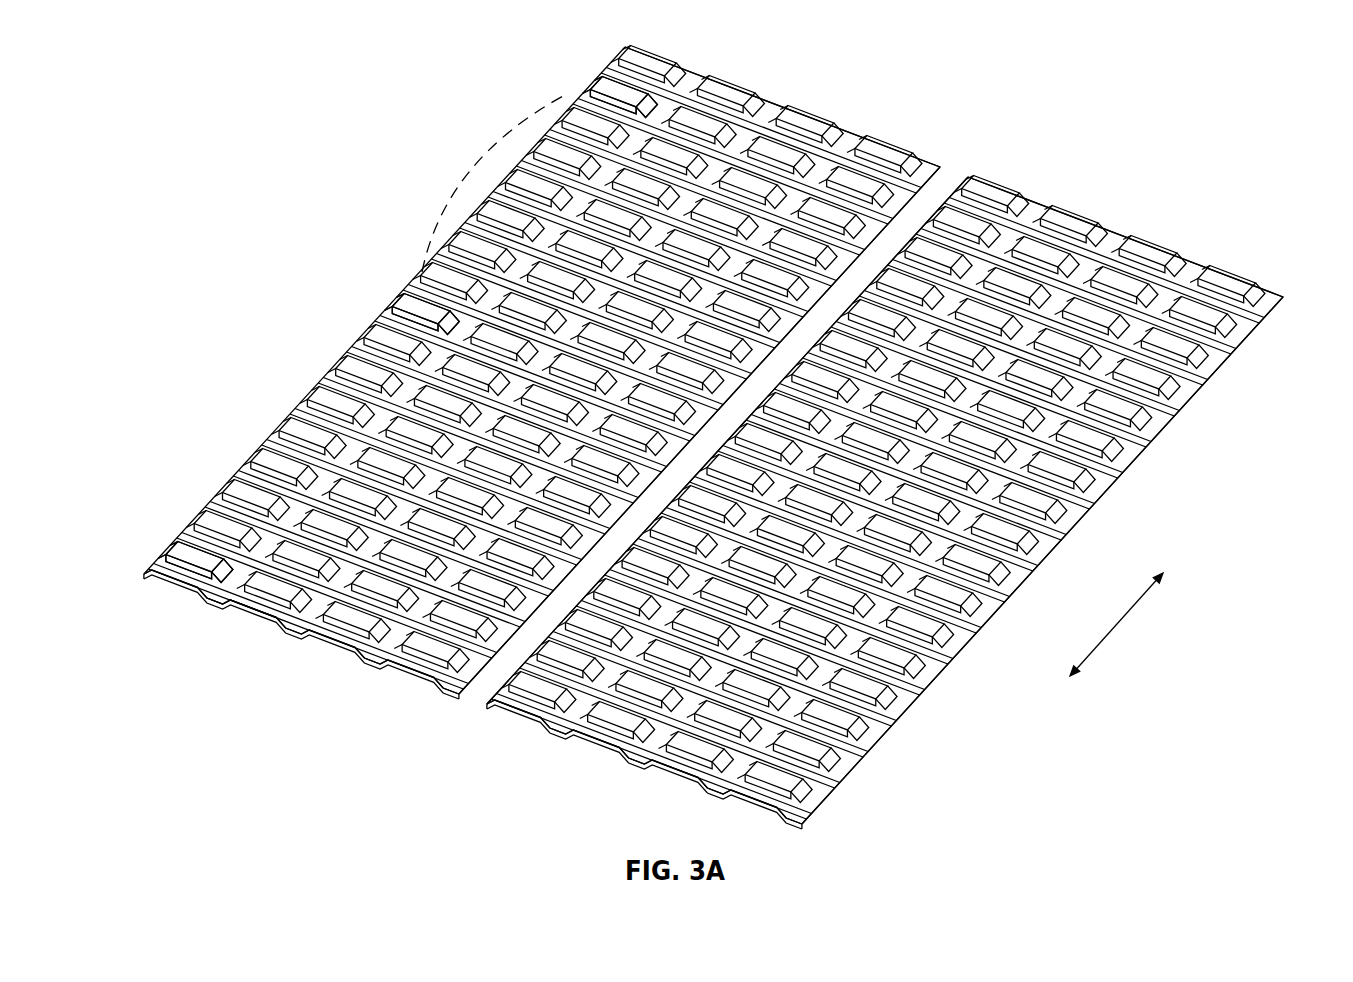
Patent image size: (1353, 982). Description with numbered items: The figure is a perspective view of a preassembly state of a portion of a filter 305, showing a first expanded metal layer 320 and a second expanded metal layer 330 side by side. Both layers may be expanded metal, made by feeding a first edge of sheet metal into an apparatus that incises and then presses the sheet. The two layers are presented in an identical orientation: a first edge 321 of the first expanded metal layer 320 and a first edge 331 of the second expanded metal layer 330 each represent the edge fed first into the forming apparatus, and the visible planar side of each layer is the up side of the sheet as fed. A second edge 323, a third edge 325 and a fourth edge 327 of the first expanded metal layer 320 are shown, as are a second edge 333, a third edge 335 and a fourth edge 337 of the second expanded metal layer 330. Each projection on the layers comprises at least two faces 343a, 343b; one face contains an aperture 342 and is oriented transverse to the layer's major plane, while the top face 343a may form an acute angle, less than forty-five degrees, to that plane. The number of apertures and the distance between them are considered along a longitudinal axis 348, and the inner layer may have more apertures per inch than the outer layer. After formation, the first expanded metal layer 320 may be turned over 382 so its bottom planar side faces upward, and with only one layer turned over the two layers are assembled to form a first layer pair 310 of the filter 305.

The filter 305 is at (331, 163).
The first layer pair 310 is at (446, 80).
The first expanded metal layer 320 is at (300, 403).
The first edge of the first expanded metal layer 321 is at (336, 660).
The second edge of the first expanded metal layer 323 is at (585, 103).
The third edge of the first expanded metal layer 325 is at (787, 100).
The fourth edge of the first expanded metal layer 327 is at (942, 173).
The second expanded metal layer 330 is at (1030, 582).
The first edge of the second expanded metal layer 331 is at (525, 733).
The second edge of the second expanded metal layer 333 is at (1200, 388).
The third edge of the second expanded metal layer 335 is at (1125, 232).
The fourth edge of the second expanded metal layer 337 is at (487, 700).
The aperture 342 is at (182, 574).
The top face 343a is at (213, 612).
The face 343b is at (240, 590).
The longitudinal axis 348 is at (1116, 631).
The turn over 382 is at (470, 180).